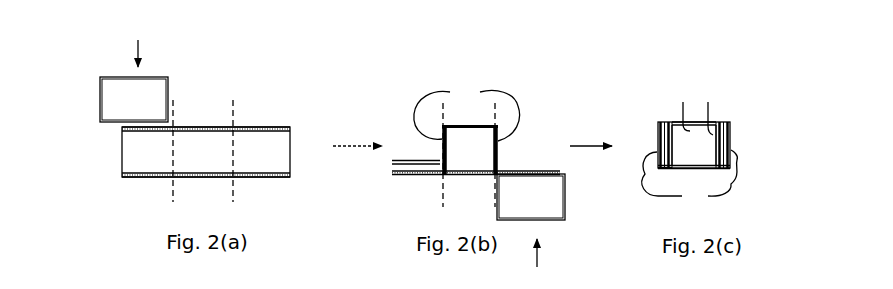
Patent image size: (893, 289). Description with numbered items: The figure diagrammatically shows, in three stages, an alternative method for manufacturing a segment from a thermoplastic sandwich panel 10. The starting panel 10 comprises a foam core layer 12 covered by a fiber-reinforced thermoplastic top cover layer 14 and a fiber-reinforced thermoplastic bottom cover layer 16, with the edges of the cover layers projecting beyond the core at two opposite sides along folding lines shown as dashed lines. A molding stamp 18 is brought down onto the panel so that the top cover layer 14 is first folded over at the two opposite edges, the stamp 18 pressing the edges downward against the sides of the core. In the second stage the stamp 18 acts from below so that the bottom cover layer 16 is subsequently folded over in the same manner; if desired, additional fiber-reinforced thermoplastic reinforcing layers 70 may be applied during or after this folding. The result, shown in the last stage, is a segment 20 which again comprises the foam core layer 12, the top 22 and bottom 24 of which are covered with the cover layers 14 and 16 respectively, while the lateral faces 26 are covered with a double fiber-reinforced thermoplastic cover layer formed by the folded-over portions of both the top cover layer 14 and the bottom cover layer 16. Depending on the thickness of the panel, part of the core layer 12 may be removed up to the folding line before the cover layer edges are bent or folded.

In FIG. 2A, the thermoplastic sandwich panel 10 is at (268, 112).
In FIG. 2A, the foam core layer 12 is at (147, 160).
In FIG. 2C, the foam core layer 12 is at (685, 138).
In FIG. 2A, the top cover layer 14 is at (223, 127).
In FIG. 2B, the top cover layer 14 is at (468, 125).
In FIG. 2C, the top cover layer 14 is at (703, 122).
In FIG. 2A, the bottom cover layer 16 is at (165, 174).
In FIG. 2B, the bottom cover layer 16 is at (523, 170).
In FIG. 2C, the bottom cover layer 16 is at (693, 169).
In FIG. 2A, the molding stamp 18 is at (122, 99).
In FIG. 2B, the molding stamp 18 is at (553, 205).
In FIG. 2C, the segment 20 is at (653, 97).
In FIG. 2C, the top 22 is at (713, 109).
In FIG. 2C, the bottom 24 is at (671, 175).
In FIG. 2C, the lateral faces 26 is at (649, 133).
In FIG. 2B, the reinforcing layers 70 is at (412, 167).